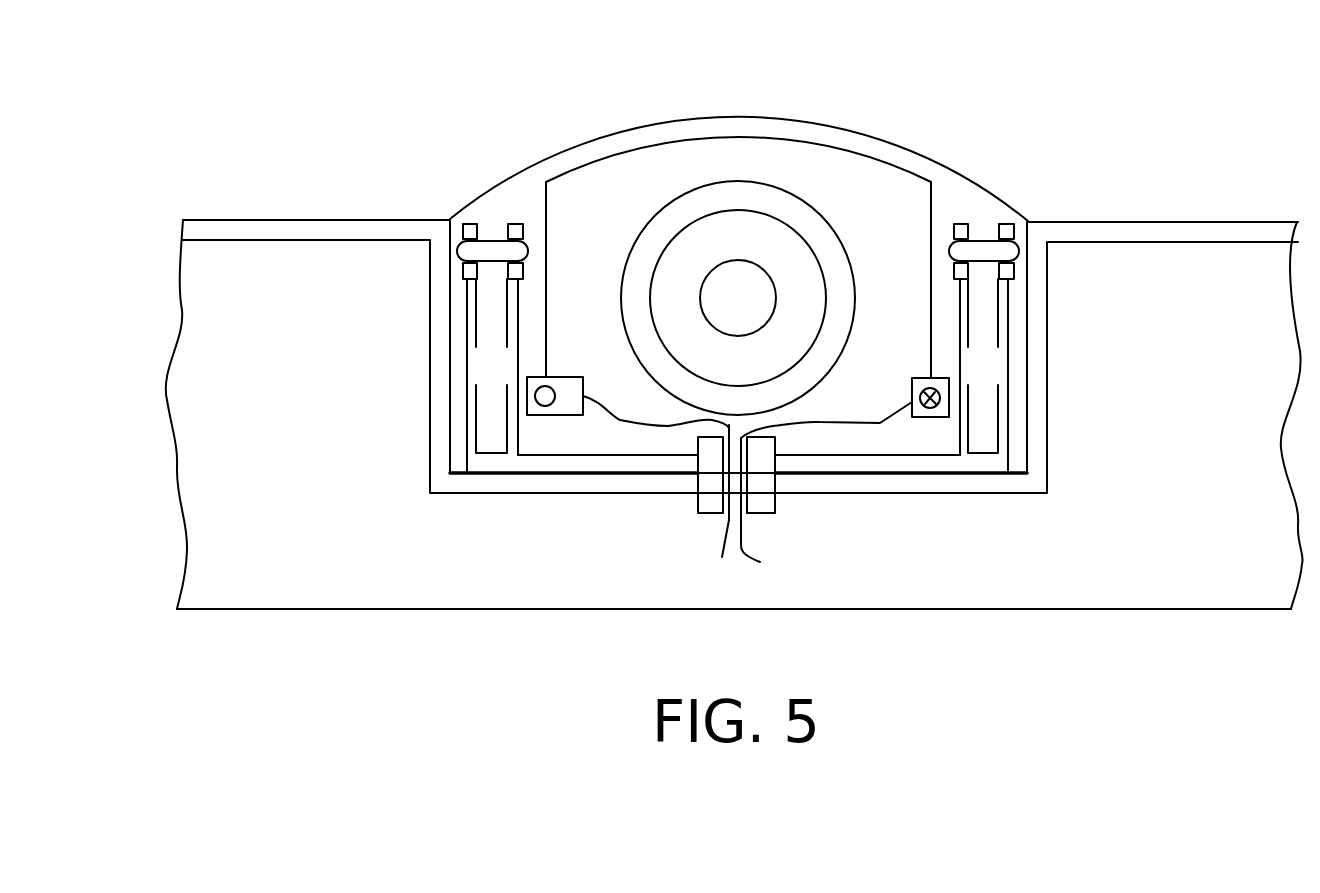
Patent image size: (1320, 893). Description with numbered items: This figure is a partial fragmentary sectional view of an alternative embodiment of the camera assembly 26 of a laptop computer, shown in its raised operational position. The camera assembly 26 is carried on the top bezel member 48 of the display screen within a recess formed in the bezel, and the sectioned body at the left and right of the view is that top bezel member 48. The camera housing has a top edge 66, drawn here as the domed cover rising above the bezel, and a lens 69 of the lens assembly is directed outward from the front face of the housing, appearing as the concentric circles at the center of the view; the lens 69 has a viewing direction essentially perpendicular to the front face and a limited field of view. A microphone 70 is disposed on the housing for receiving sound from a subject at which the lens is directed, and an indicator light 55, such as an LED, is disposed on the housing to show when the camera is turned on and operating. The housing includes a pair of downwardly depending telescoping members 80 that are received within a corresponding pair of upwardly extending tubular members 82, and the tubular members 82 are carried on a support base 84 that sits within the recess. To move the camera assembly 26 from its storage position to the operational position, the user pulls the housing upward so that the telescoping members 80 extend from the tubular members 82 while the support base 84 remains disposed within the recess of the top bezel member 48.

The camera assembly 26 is at (657, 304).
The top bezel member 48 is at (1123, 373).
The indicator light 55 is at (930, 410).
The top edge 66 is at (567, 150).
The lens 69 is at (738, 297).
The microphone 70 is at (560, 398).
The telescoping members 80 is at (498, 328).
The tubular members 82 is at (470, 403).
The support base 84 is at (527, 462).